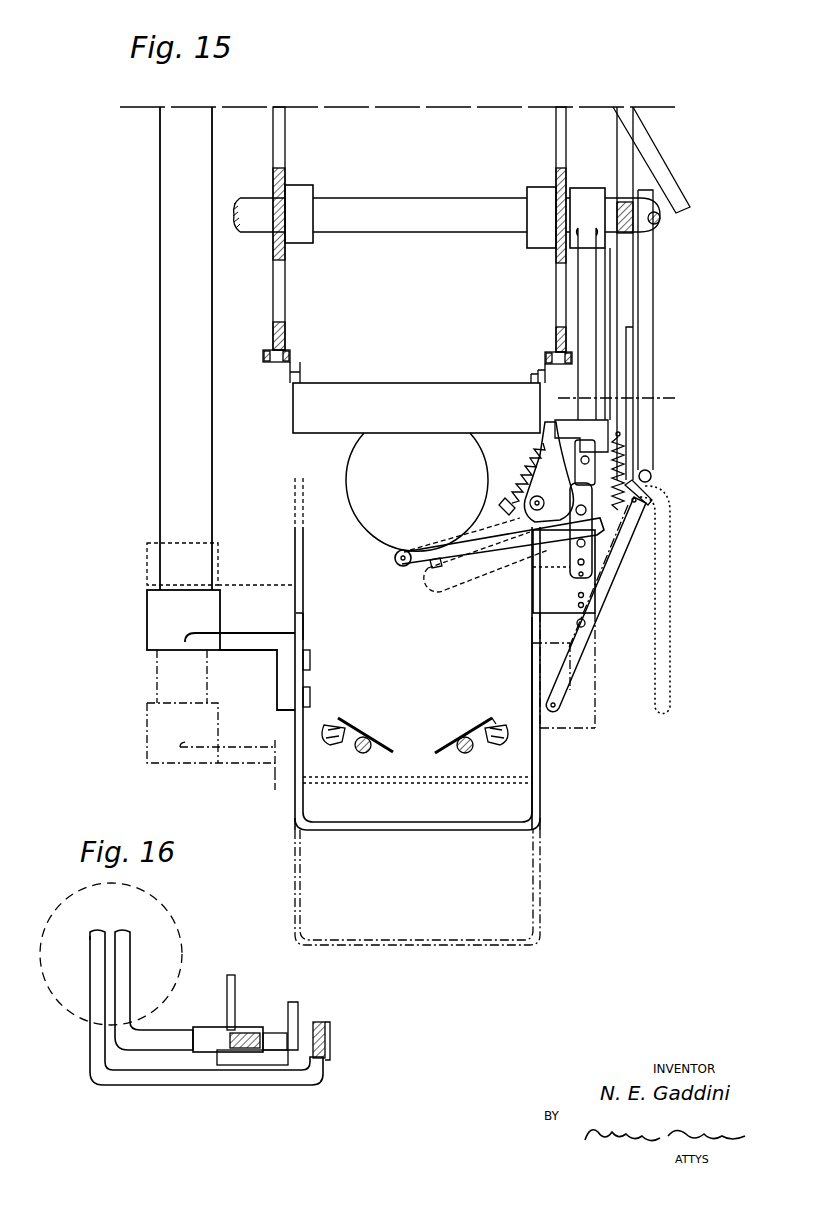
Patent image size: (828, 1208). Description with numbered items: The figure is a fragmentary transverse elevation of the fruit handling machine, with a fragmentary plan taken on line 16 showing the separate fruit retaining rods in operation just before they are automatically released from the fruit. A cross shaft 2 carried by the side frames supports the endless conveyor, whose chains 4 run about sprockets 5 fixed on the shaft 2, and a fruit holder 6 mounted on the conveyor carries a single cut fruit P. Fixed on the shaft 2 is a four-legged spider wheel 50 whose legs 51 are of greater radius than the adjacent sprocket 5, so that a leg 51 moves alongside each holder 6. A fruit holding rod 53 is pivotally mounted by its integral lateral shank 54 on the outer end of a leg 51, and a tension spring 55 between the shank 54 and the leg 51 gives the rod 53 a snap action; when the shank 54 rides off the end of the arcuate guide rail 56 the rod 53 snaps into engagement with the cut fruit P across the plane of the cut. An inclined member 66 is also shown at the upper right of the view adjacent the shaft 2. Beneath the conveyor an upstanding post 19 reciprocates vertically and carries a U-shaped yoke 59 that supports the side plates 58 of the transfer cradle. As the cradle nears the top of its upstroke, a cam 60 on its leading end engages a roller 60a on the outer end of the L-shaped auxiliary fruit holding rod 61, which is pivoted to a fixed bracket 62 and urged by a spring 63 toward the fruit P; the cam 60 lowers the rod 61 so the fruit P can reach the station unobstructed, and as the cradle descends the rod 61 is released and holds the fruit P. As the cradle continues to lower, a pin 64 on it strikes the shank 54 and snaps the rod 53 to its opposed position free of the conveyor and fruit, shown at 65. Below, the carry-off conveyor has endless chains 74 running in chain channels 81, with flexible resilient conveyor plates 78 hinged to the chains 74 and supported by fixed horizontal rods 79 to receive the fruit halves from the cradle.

In FIG. 15, the cross shaft 2 is at (466, 226).
In FIG. 15, the chain 4 is at (268, 363).
In FIG. 15, the sprocket 5 is at (288, 338).
In FIG. 15, the fruit holder 6 is at (330, 383).
In FIG. 15, the section line 16- 16 is at (621, 389).
In FIG. 15, the upstanding post 19 is at (162, 468).
In FIG. 15, the spider wheel 50 is at (625, 233).
In FIG. 15, the spider leg 51 is at (628, 416).
In FIG. 16, the spider leg 51 is at (327, 1040).
In FIG. 15, the fruit holding rod 53 is at (399, 568).
In FIG. 16, the fruit holding rod 53 is at (96, 993).
In FIG. 15, the lateral shank 54 is at (505, 538).
In FIG. 16, the lateral shank 54 is at (192, 1078).
In FIG. 15, the tension spring 55 is at (627, 466).
In FIG. 15, the arcuate guide rail 56 is at (655, 330).
In FIG. 15, the side plate 58 is at (305, 562).
In FIG. 15, the yoke 59 is at (543, 750).
In FIG. 15, the cam 60 is at (650, 496).
In FIG. 16, the cam 60 is at (275, 1040).
In FIG. 15, the roller 60a is at (578, 462).
In FIG. 16, the roller 60a is at (243, 1040).
In FIG. 15, the auxiliary fruit holding rod 61 is at (442, 576).
In FIG. 16, the auxiliary fruit holding rod 61 is at (178, 1038).
In FIG. 15, the fixed bracket 62 is at (560, 422).
In FIG. 16, the fixed bracket 62 is at (268, 1060).
In FIG. 15, the spring 63 is at (540, 462).
In FIG. 15, the pin 64 is at (600, 528).
In FIG. 15, the free position of rod 65 is at (672, 654).
In FIG. 15, the inclined bar 66 is at (680, 180).
In FIG. 15, the endless chain 74 is at (493, 720).
In FIG. 15, the conveyor plate 78 is at (456, 746).
In FIG. 15, the horizontal rod 79 is at (363, 750).
In FIG. 15, the chain channel 81 is at (330, 748).
In FIG. 15, the fruit P is at (382, 462).
In FIG. 16, the fruit P is at (183, 948).